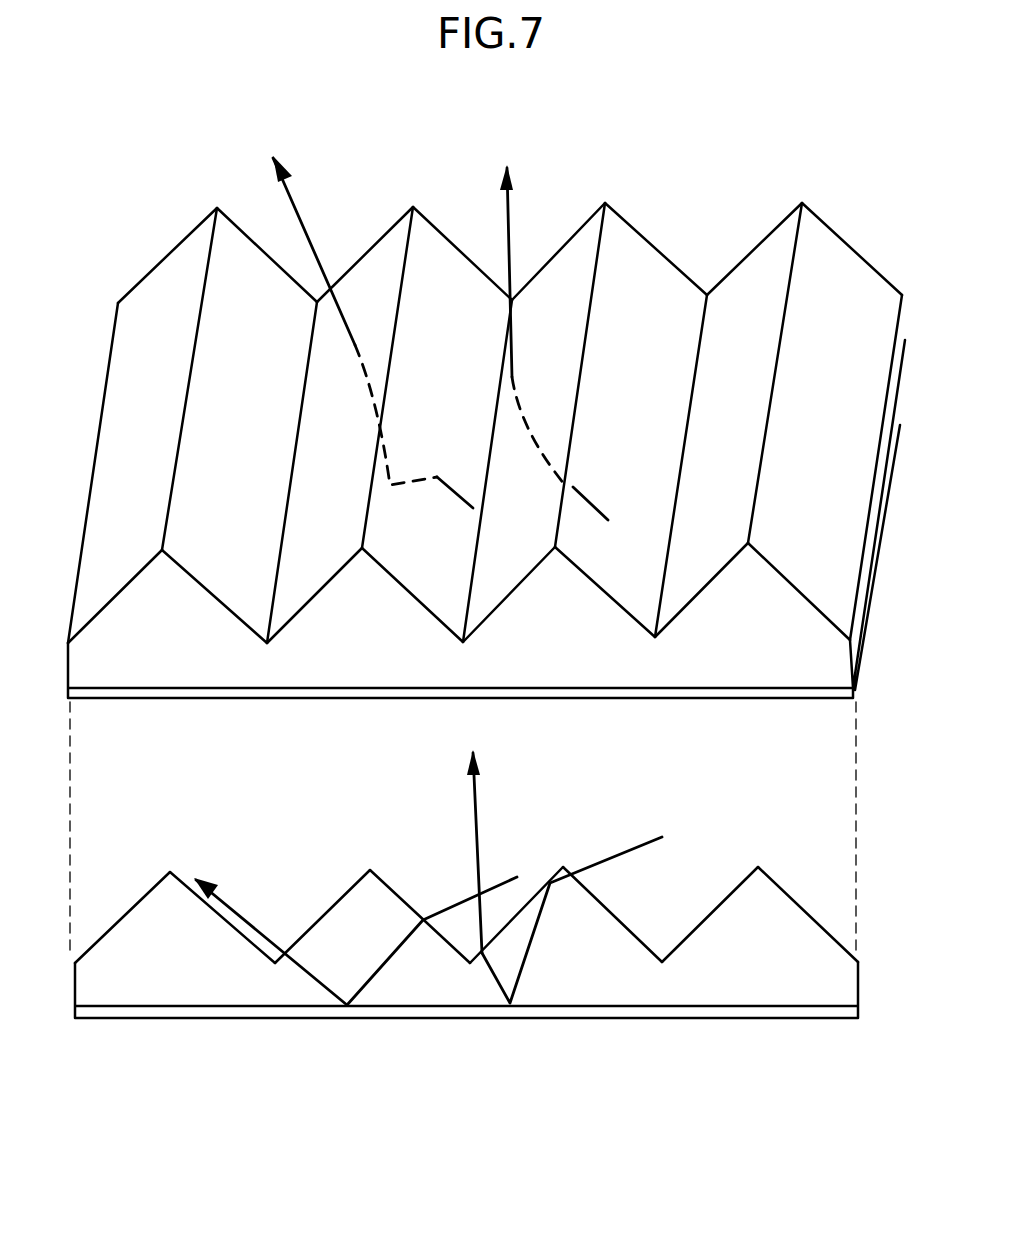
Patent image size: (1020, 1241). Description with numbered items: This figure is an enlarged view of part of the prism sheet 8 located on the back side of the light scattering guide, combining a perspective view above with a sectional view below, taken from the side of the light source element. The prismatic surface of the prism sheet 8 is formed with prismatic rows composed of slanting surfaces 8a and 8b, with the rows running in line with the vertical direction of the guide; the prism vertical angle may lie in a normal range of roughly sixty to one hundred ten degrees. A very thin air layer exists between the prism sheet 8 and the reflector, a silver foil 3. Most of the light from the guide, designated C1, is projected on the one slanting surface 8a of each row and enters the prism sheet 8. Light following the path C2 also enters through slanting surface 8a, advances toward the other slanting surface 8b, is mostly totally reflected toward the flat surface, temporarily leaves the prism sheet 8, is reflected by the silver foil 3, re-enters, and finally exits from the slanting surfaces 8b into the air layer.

The reflector (silver foil) 3 is at (788, 690).
The prism sheet 8 is at (661, 240).
The slanting surface 8a is at (780, 888).
The slanting surface 8b is at (723, 897).
The light C1 is at (300, 210).
The light path C2 is at (510, 215).